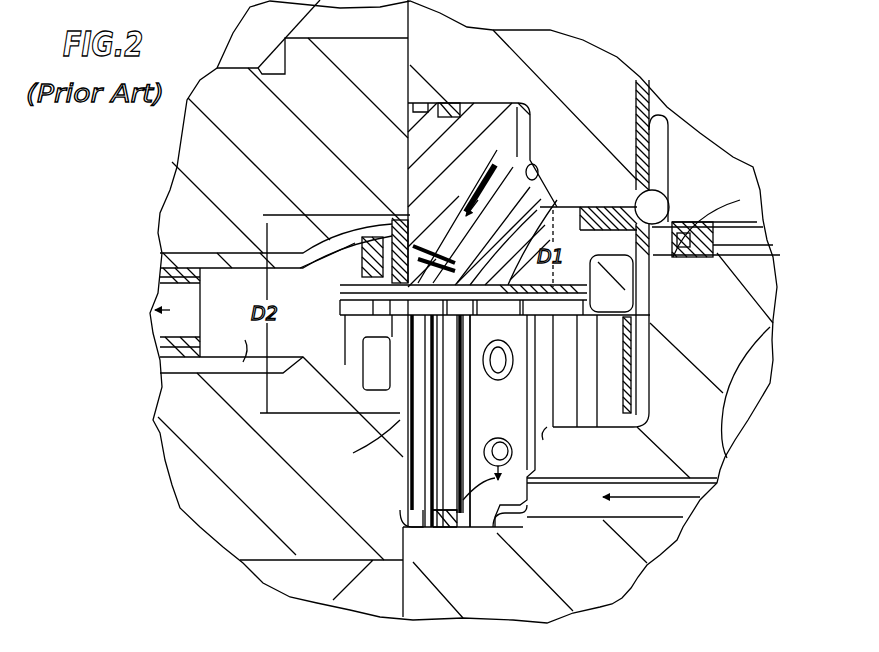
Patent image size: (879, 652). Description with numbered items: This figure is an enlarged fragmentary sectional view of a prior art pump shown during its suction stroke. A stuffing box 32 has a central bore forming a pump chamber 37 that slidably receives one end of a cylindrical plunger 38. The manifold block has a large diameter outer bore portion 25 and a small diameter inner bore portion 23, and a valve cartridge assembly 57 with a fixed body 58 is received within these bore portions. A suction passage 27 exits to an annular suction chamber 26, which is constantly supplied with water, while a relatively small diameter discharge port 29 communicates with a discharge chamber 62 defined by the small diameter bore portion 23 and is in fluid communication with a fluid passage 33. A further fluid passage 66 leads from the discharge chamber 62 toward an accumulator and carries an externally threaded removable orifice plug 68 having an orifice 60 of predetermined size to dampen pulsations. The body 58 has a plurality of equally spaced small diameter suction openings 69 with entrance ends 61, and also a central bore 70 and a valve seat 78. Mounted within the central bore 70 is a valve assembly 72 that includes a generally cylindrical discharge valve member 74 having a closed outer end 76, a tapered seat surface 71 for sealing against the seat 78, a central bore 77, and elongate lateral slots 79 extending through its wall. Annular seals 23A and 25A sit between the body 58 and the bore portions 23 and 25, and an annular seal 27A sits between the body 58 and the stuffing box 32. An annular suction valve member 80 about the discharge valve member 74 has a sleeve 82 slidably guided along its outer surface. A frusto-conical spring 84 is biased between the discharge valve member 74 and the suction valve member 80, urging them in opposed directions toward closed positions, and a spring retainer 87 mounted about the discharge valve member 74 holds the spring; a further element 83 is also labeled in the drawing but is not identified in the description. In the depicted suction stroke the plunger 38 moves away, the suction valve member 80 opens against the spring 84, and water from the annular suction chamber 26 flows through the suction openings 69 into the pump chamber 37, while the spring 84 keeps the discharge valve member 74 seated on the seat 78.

The small diameter inner bore portion 23 is at (593, 413).
The annular seal 23A is at (613, 207).
The large diameter outer bore portion 25 is at (492, 533).
The annular seal 25A is at (447, 533).
The annular suction chamber 26 is at (490, 493).
The suction passage 27 is at (685, 525).
The annular seal 27A is at (358, 448).
The discharge port 29 is at (660, 207).
The stuffing box 32 is at (227, 513).
The fluid passage 33 is at (657, 118).
The pump chamber 37 is at (250, 373).
The plunger 38 is at (193, 323).
The valve cartridge assembly 57 is at (400, 478).
The body 58 is at (462, 172).
The orifice 60 is at (713, 228).
The entrance ends 61 is at (497, 150).
The discharge chamber 62 is at (650, 357).
The fluid passage 66 is at (743, 253).
The orifice plug 68 is at (740, 200).
The suction openings 69 is at (507, 160).
The central bore 70 is at (548, 177).
The tapered seat surface 71 is at (640, 272).
The valve assembly 72 is at (330, 367).
The discharge valve member 74 is at (531, 300).
The closed outer end 76 is at (652, 322).
The central bore 77 is at (447, 318).
The valve seat 78 is at (583, 283).
The lateral slots 79 is at (640, 385).
The suction valve member 80 is at (378, 250).
The sleeve 82 is at (521, 112).
The pin 83 is at (360, 348).
The spring 84 is at (337, 260).
The spring retainer 87 is at (347, 330).